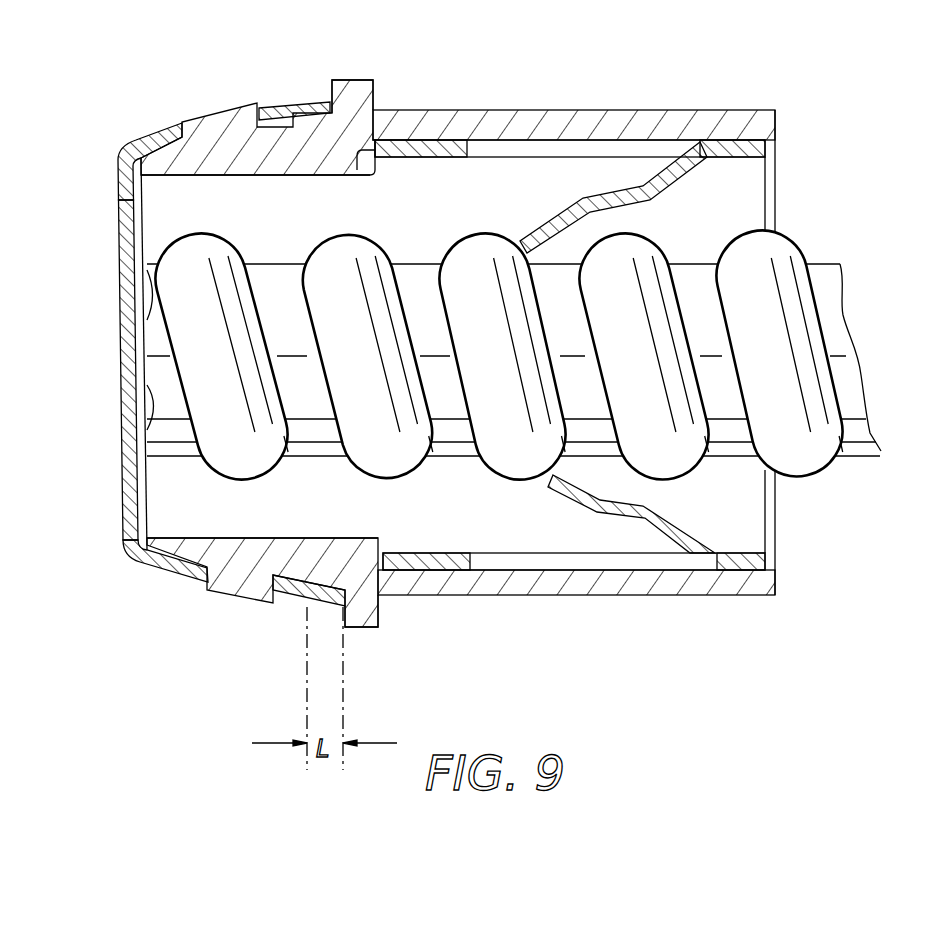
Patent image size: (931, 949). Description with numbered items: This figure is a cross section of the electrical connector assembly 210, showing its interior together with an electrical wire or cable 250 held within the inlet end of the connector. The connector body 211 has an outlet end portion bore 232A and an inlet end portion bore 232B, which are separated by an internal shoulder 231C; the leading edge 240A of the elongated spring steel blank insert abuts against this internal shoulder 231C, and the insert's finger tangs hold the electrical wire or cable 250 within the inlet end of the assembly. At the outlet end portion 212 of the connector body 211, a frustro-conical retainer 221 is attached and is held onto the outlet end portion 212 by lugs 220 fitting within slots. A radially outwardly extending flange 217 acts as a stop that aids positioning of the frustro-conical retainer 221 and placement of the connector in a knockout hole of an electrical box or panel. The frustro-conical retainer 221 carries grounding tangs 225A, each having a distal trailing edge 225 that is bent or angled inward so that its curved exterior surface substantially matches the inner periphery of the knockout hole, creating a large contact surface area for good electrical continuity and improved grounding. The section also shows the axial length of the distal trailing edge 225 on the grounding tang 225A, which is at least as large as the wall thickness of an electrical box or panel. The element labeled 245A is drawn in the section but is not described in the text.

The electrical connector assembly 210 is at (415, 85).
The connector body 211 is at (697, 583).
The outlet end portion 212 is at (277, 107).
The radially outwardly extending flange 217 is at (360, 80).
The lugs 220 is at (230, 572).
The frustro-conical retainer 221 is at (116, 505).
The distal trailing edge 225 is at (316, 100).
The grounding tangs 225A is at (160, 135).
The internal shoulder 231C is at (370, 155).
The outlet end portion bore 232A is at (190, 185).
The inlet end portion bore 232B is at (545, 537).
The leading edge of the elongated spring steel blank insert 240A is at (393, 595).
The spring insert finger 245A is at (612, 192).
The electrical wire or cable 250 is at (807, 243).